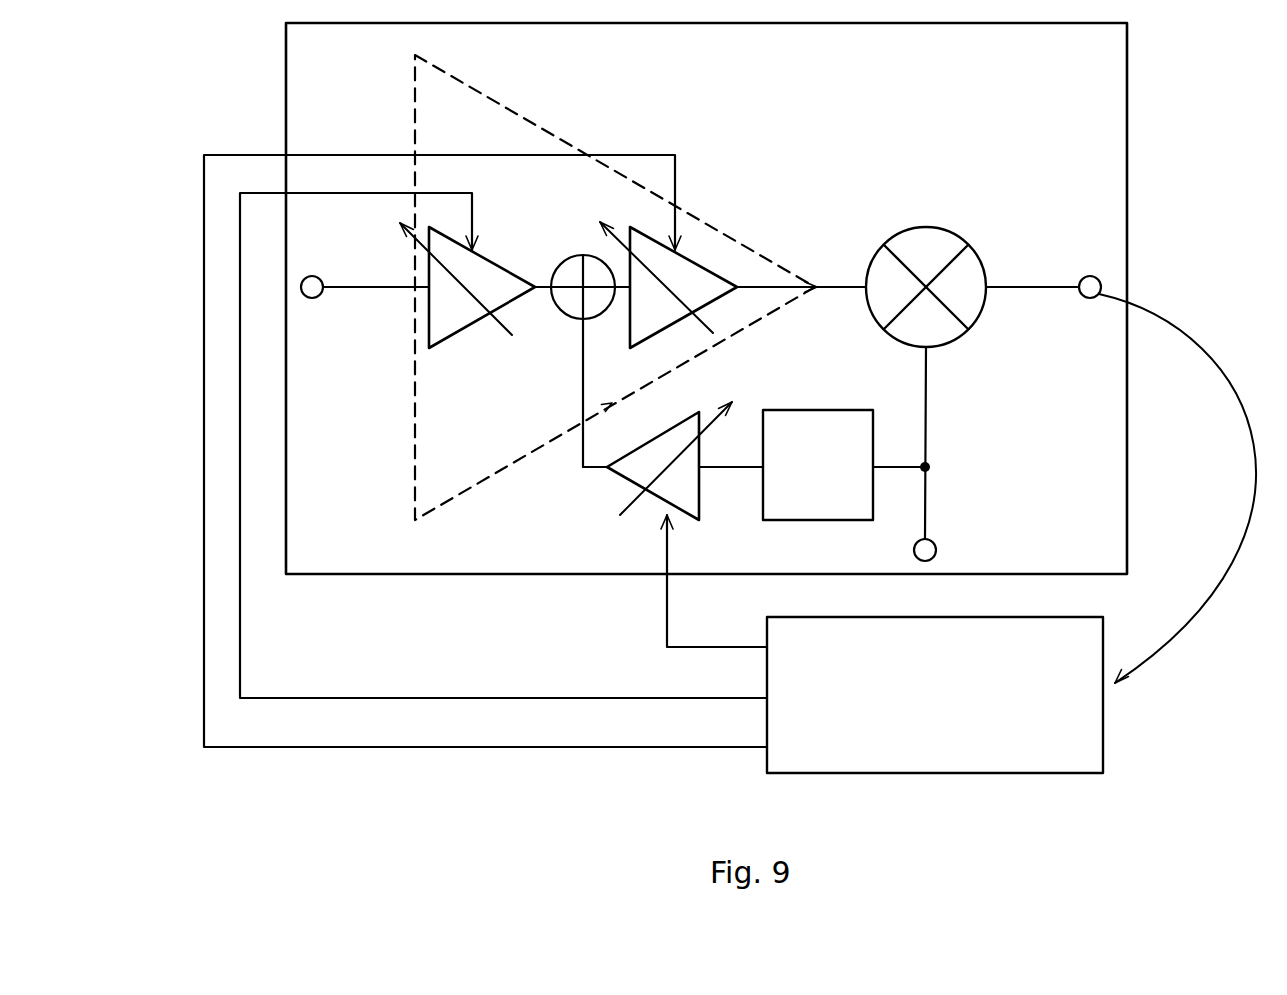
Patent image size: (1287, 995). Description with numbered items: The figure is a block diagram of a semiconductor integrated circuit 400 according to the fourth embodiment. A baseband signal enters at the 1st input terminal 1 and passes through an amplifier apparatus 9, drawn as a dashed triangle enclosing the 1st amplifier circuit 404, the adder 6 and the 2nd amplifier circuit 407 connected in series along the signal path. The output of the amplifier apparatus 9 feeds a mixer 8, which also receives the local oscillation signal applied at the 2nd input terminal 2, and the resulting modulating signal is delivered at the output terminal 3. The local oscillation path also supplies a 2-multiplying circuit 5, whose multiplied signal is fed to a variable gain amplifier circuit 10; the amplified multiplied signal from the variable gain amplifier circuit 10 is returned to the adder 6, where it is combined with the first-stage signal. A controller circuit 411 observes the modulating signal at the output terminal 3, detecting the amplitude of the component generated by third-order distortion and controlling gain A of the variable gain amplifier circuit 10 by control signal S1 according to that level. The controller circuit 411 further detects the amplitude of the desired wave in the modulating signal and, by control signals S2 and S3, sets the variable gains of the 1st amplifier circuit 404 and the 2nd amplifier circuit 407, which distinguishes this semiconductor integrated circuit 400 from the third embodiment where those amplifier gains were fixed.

The 1st input terminal 1 is at (312, 276).
The 2nd input terminal 2 is at (937, 550).
The output terminal 3 is at (1090, 275).
The 2-multiplying circuit 5 is at (819, 409).
The adder 6 is at (583, 254).
The mixer 8 is at (926, 226).
The amplifier apparatus 9 is at (718, 230).
The variable gain amplifier circuit 10 is at (699, 413).
The 1st amplifier circuit 404 is at (468, 328).
The 2nd amplifier circuit 407 is at (630, 326).
The controller circuit 411 is at (1103, 730).
The semiconductor integrated circuit 400 is at (705, 832).
The control signal S1 is at (666, 555).
The control signal S2 is at (499, 697).
The control signal S3 is at (380, 746).